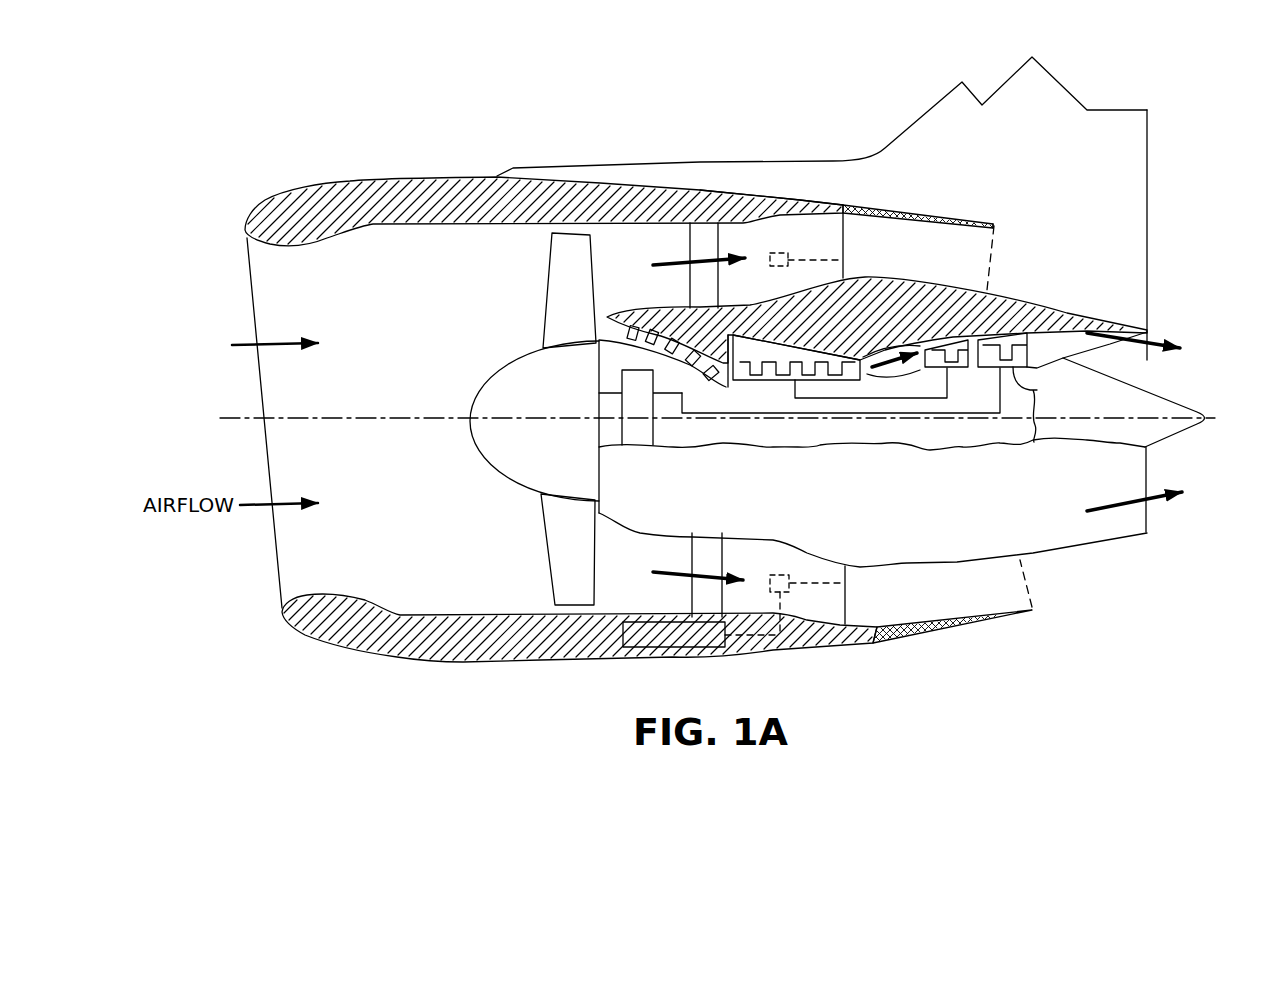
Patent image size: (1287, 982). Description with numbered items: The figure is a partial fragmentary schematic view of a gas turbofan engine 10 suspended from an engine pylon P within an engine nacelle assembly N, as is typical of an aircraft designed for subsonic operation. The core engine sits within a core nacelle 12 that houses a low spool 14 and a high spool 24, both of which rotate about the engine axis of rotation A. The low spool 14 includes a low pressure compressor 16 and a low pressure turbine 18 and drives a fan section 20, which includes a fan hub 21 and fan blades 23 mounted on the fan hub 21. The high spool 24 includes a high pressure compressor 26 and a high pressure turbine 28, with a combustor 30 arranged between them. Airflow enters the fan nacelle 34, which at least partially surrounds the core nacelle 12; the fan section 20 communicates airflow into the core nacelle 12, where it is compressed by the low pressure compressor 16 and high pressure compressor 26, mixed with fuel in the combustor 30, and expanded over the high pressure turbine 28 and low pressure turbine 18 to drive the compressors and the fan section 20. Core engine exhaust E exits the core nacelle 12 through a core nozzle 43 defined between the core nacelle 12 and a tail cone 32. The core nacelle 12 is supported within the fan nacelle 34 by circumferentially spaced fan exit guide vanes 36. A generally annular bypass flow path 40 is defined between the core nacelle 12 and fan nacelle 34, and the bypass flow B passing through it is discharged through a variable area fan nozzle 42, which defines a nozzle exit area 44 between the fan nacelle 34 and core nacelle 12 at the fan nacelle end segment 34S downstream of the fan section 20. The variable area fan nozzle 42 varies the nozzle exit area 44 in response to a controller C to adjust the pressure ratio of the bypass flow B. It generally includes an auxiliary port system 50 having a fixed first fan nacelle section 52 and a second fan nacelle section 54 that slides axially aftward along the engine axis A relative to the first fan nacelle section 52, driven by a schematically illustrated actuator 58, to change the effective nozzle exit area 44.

The gas turbofan engine 10 is at (422, 145).
The core nacelle 12 is at (1015, 296).
The low spool 14 is at (845, 420).
The low pressure compressor 16 is at (707, 370).
The low pressure turbine 18 is at (1037, 390).
The fan section 20 is at (548, 556).
The fan hub 21 is at (563, 373).
The fan blades 23 is at (557, 310).
The high spool 24 is at (820, 401).
The high pressure compressor 26 is at (783, 368).
The high pressure turbine 28 is at (957, 369).
The combustor 30 is at (900, 368).
The tail cone 32 is at (1148, 400).
The fan nacelle 34 is at (544, 183).
The fan nacelle end segment 34S is at (978, 222).
The fan exit guide vanes 36 is at (707, 292).
The bypass flow path 40 is at (641, 258).
The variable area fan nozzle 42 is at (790, 660).
The core nozzle 43 is at (1152, 333).
The nozzle exit area 44 is at (978, 237).
The auxiliary port system 50 is at (822, 122).
The first fan nacelle section 52 is at (790, 192).
The second fan nacelle section 54 is at (917, 207).
The actuator 58 is at (786, 252).
The engine axis of rotation A is at (732, 456).
The bypass flow B is at (680, 568).
The controller C is at (694, 648).
The core engine exhaust E is at (1127, 510).
The engine nacelle assembly N is at (687, 168).
The pylon P is at (837, 208).